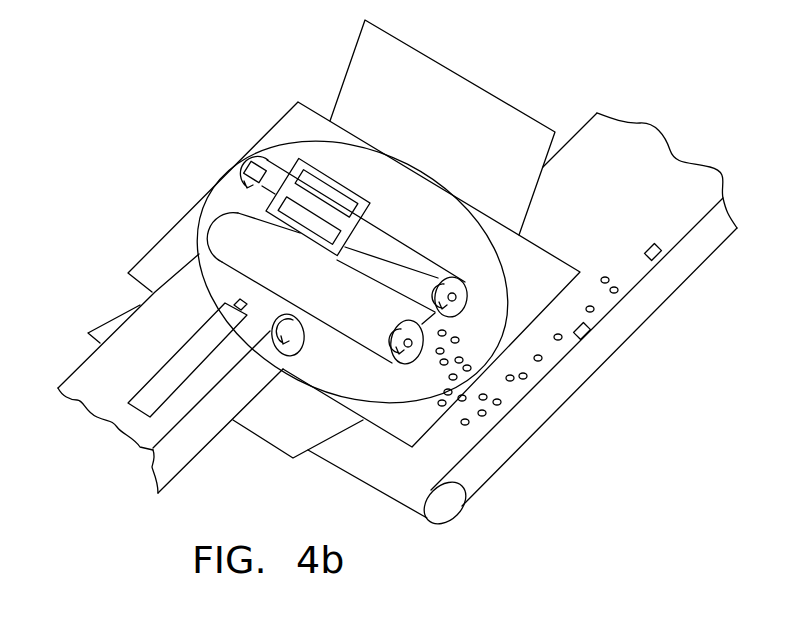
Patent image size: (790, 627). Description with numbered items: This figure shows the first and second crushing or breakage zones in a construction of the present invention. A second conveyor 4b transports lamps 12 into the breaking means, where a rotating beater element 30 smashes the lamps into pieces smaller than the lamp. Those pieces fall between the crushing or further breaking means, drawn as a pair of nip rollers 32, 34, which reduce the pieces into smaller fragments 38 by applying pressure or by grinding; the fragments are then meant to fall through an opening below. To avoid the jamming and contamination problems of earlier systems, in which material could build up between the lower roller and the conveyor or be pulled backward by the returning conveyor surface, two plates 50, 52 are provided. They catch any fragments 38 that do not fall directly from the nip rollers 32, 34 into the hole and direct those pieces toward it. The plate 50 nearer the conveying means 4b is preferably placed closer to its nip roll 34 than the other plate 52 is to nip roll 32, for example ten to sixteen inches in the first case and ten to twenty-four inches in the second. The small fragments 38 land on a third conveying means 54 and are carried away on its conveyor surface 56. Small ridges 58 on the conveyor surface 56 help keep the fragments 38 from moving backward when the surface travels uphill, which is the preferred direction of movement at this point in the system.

The second conveyor 4b is at (91, 383).
The lamps 12 is at (193, 340).
The beater element 30 is at (311, 158).
The nip roller 32 is at (470, 270).
The nip roller 34 is at (396, 364).
The small fragments 38 is at (500, 403).
The plate 50 is at (266, 444).
The plate 52 is at (481, 90).
The third conveying means 54 is at (485, 495).
The conveyor surface 56 is at (508, 462).
The small ridges 58 is at (657, 260).